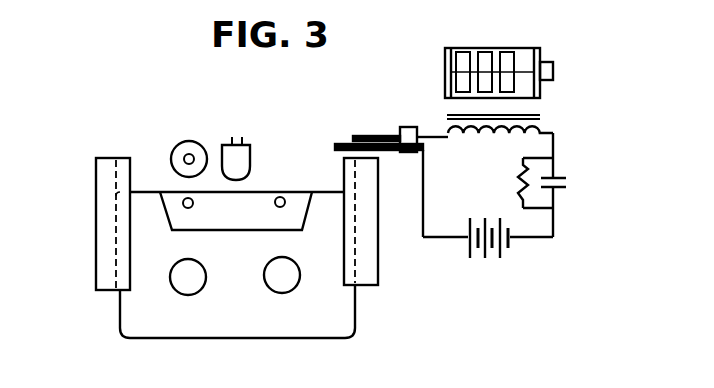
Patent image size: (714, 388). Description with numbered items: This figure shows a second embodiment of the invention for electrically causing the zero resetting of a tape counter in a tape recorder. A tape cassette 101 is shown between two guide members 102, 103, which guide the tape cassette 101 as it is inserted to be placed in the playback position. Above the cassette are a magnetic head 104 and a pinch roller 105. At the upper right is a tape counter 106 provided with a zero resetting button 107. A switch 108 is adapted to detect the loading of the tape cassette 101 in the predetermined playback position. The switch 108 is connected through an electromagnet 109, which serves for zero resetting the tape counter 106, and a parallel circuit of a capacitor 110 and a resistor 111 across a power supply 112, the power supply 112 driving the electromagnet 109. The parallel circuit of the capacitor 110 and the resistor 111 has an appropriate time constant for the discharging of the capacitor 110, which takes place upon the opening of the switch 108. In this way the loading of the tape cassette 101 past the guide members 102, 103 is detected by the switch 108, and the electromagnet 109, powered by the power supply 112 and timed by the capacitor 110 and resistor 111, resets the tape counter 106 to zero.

The tape cassette 101 is at (236, 338).
The guide member 102 is at (108, 291).
The guide member 103 is at (362, 287).
The magnetic head 104 is at (250, 163).
The pinch roller 105 is at (178, 152).
The tape counter 106 is at (445, 70).
The zero resetting button 107 is at (548, 70).
The switch 108 is at (380, 135).
The electromagnet 109 is at (446, 134).
The capacitor 110 is at (558, 177).
The resistor 111 is at (520, 183).
The power supply 112 is at (468, 242).